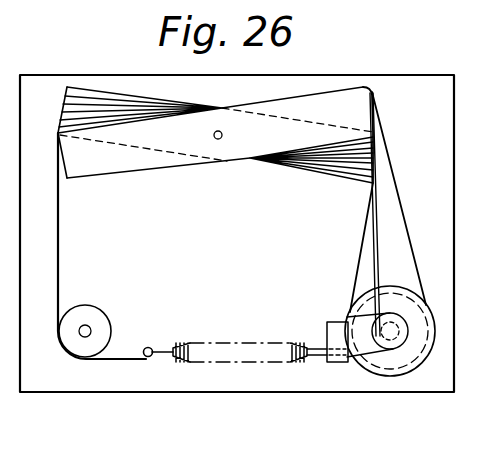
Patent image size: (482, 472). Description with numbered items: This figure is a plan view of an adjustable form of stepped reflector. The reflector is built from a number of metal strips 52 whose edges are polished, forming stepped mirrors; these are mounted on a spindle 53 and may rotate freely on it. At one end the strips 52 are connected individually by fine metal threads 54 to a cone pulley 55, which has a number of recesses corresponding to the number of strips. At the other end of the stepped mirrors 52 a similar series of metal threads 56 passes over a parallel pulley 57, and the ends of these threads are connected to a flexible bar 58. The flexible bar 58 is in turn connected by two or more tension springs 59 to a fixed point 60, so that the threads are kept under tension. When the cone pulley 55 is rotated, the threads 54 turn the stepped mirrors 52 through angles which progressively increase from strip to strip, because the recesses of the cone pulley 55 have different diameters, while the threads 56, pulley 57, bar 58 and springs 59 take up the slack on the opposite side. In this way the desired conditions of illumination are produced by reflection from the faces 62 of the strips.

The faces 62 is at (97, 104).
The metal strips 52 is at (350, 103).
The spindle 53 is at (217, 139).
The fine metal threads 54 is at (403, 237).
The cone pulley 55 is at (410, 356).
The metal threads 56 is at (62, 272).
The parallel pulley 57 is at (96, 320).
The flexible bar 58 is at (151, 347).
The tension springs 59 is at (247, 334).
The fixed point 60 is at (334, 328).